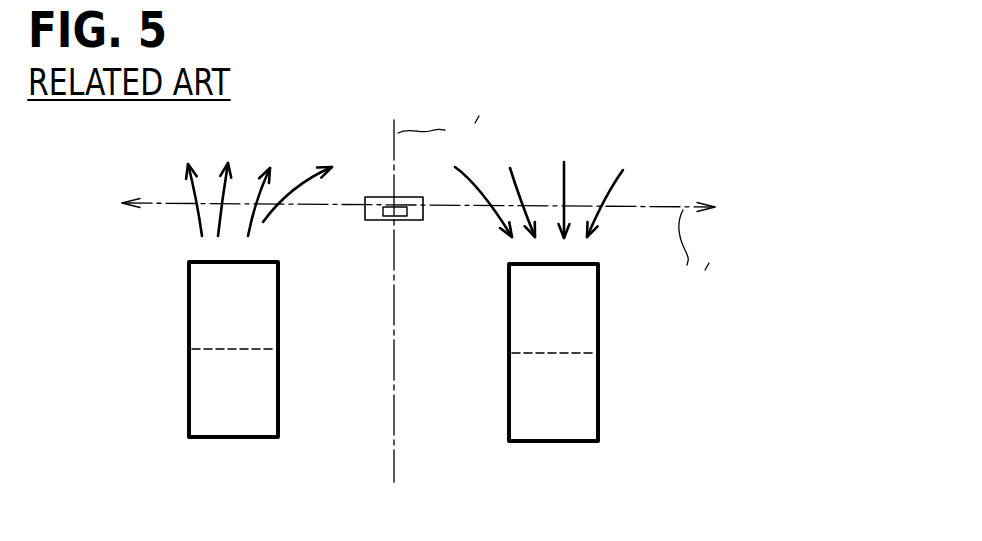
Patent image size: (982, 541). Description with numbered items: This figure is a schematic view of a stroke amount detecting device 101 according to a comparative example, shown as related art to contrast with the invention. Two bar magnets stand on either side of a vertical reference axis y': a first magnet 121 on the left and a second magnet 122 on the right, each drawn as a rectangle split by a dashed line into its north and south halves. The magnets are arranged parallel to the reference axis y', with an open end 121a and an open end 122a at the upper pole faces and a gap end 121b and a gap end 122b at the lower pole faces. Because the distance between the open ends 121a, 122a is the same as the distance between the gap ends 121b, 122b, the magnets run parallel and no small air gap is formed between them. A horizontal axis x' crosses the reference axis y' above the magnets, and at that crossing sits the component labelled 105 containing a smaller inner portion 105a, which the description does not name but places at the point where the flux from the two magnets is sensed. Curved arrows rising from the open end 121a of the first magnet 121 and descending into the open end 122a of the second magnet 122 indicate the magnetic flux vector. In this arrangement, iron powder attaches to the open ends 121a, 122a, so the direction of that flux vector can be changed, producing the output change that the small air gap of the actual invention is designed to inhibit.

The magnetic sensor device (related art) 101 is at (690, 188).
The magnetic sensor 105 is at (385, 197).
The magnetic sensing element 105a is at (388, 218).
The first magnet 121 is at (208, 332).
The open end 121a is at (207, 260).
The gap end 121b is at (227, 441).
The second magnet 122 is at (580, 340).
The open end 122a is at (557, 262).
The gap end 122b is at (552, 443).